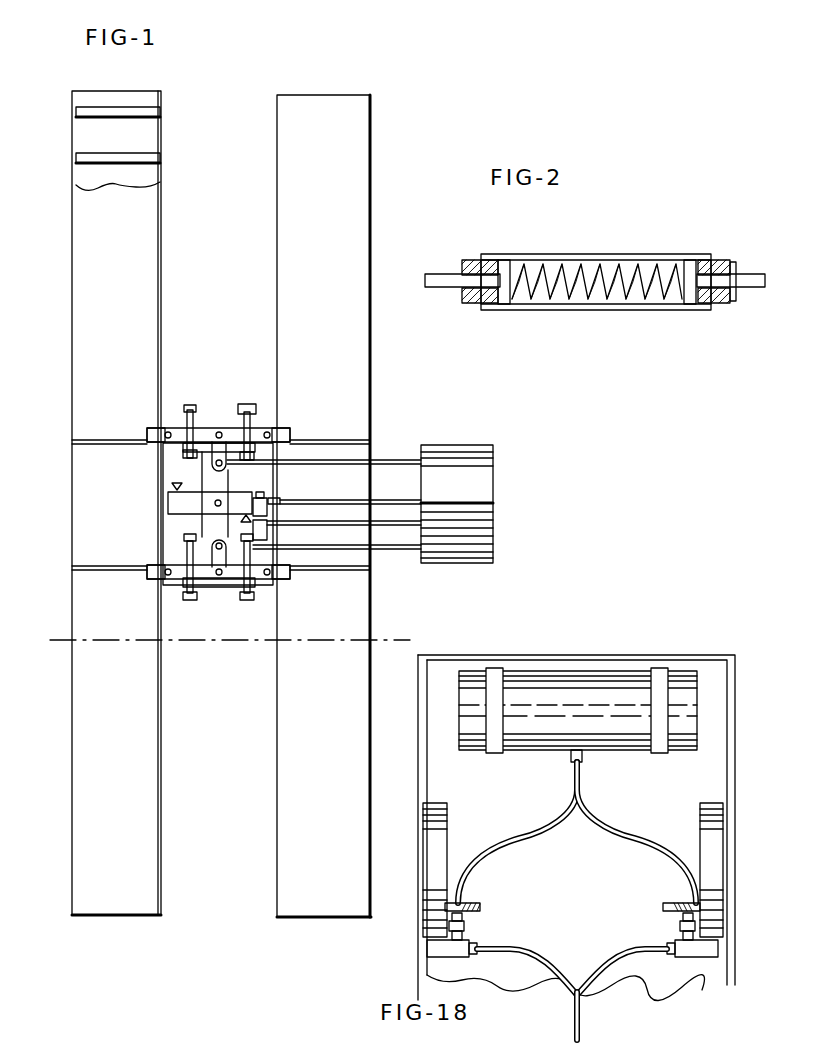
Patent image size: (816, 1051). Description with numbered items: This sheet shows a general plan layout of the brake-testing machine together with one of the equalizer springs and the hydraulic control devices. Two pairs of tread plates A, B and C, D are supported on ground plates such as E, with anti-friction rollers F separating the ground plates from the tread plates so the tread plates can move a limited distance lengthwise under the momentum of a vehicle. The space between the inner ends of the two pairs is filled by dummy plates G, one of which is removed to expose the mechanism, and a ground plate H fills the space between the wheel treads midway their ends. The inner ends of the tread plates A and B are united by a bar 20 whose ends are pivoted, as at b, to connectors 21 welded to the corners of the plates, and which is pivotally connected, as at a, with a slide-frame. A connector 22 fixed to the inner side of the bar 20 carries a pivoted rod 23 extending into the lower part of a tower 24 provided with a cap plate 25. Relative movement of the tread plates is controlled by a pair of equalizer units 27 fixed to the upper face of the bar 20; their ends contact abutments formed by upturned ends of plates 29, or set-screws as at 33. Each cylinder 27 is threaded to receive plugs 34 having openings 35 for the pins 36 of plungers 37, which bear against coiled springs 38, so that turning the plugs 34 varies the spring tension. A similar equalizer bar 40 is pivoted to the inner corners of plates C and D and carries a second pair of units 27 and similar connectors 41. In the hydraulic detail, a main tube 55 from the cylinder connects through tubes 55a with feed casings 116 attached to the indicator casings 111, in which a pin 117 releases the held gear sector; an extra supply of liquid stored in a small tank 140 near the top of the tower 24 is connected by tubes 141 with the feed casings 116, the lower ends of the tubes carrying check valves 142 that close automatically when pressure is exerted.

In FIG. 1, the tread plate A is at (84, 261).
In FIG. 1, the tread plate B is at (366, 215).
In FIG. 1, the tread plate C is at (76, 679).
In FIG. 1, the tread plate D is at (284, 690).
In FIG. 1, the ground plate E is at (162, 121).
In FIG. 1, the anti-friction rollers F is at (99, 152).
In FIG. 1, the dummy plate G is at (76, 471).
In FIG. 1, the ground plate H is at (228, 586).
In FIG. 1, the pivot a is at (222, 428).
In FIG. 1, the pivot b is at (169, 428).
In FIG. 1, the lower plate portion c is at (216, 586).
In FIG. 1, the bar 20 is at (65, 636).
In FIG. 1, the connector 21 is at (153, 430).
In FIG. 1, the connector 22 is at (210, 465).
In FIG. 1, the rod 23 is at (343, 460).
In FIG. 18, the tower 24 is at (620, 660).
In FIG. 1, the cap plate 25 is at (471, 446).
In FIG. 1, the equalizer unit 27 is at (186, 446).
In FIG. 2, the equalizer unit 27 is at (601, 254).
In FIG. 1, the plate 29 is at (199, 425).
In FIG. 1, the set-screw 33 is at (252, 410).
In FIG. 2, the plug 34 is at (473, 258).
In FIG. 2, the opening 35 is at (735, 263).
In FIG. 2, the pin 36 is at (451, 288).
In FIG. 2, the plunger 37 is at (690, 259).
In FIG. 2, the coiled spring 38 is at (617, 306).
In FIG. 1, the equalizer bar 40 is at (181, 586).
In FIG. 1, the bar end 41 is at (154, 576).
In FIG. 18, the tube 55 is at (582, 1027).
In FIG. 18, the tube 55a is at (620, 952).
In FIG. 18, the casing 111 is at (720, 852).
In FIG. 18, the feed casing 116 is at (432, 954).
In FIG. 18, the pin 117 is at (466, 905).
In FIG. 18, the tank 140 is at (562, 670).
In FIG. 18, the tube 141 is at (520, 836).
In FIG. 18, the check valve 142 is at (464, 936).